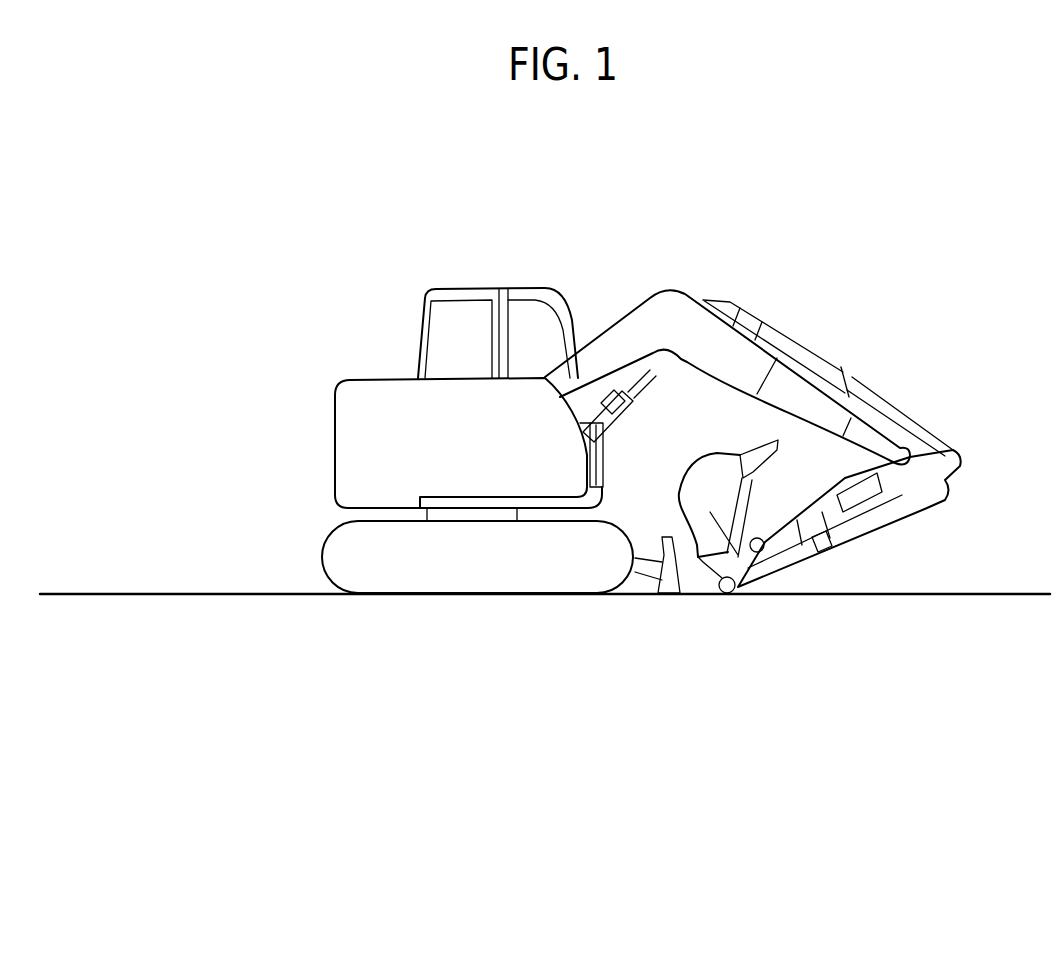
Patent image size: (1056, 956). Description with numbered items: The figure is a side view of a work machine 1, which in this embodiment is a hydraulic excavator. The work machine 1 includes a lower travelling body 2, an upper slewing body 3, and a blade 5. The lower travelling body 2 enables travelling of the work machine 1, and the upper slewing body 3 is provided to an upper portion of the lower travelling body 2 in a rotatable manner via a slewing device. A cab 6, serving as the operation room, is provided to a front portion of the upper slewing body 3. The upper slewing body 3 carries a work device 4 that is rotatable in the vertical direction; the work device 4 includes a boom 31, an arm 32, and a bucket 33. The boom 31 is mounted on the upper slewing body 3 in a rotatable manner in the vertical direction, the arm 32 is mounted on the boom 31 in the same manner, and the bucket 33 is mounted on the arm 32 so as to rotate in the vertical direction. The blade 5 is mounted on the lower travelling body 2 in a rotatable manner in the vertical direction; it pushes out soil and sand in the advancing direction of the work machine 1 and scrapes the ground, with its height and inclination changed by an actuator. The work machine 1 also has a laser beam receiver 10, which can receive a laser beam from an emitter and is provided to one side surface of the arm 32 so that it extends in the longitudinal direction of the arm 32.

The work machine 1 is at (335, 323).
The lower travelling body 2 is at (360, 523).
The upper slewing body 3 is at (355, 463).
The work device 4 is at (752, 255).
The blade 5 is at (672, 594).
The cab 6 is at (558, 297).
The laser beam receiver 10 is at (863, 493).
The boom 31 is at (805, 395).
The arm 32 is at (825, 515).
The bucket 33 is at (740, 580).